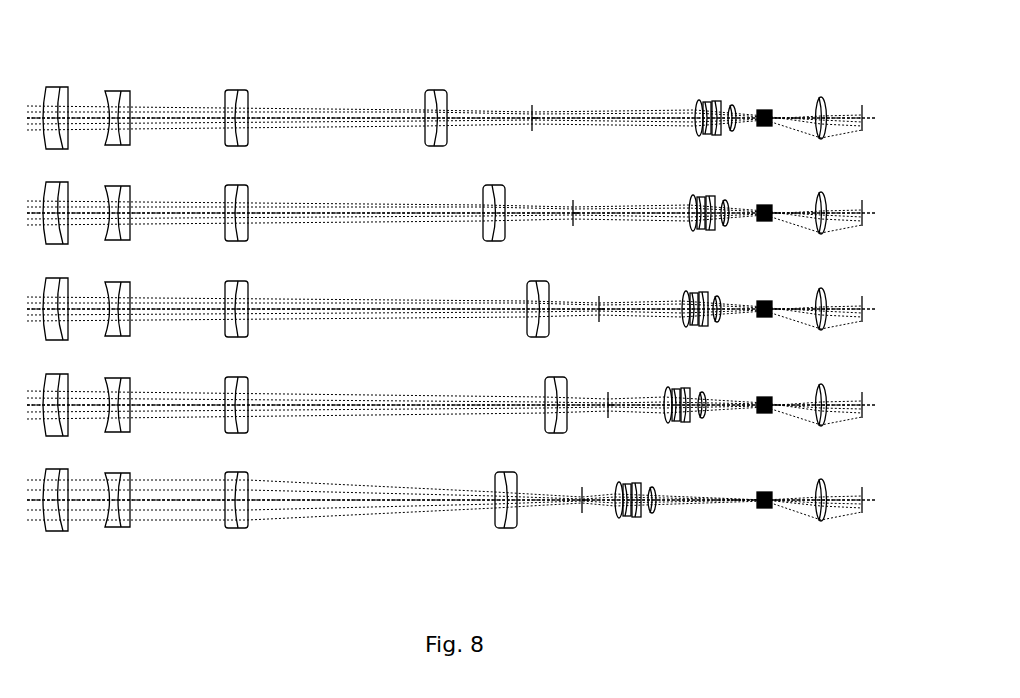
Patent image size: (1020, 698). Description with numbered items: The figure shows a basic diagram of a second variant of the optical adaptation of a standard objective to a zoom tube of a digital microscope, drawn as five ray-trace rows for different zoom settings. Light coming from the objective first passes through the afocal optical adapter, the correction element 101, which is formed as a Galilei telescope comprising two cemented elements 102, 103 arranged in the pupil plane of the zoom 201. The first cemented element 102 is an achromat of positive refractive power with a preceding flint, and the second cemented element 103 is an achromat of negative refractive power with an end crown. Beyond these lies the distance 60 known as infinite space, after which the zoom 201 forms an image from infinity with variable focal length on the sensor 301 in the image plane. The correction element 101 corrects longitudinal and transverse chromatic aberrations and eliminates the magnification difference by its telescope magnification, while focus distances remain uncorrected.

The correction element 101 is at (130, 57).
The first cemented element 102 is at (55, 106).
The second cemented element 103 is at (114, 104).
The infinite space distance 60 is at (250, 58).
The zoom 201 is at (830, 60).
The image plane sensor 301 is at (862, 105).